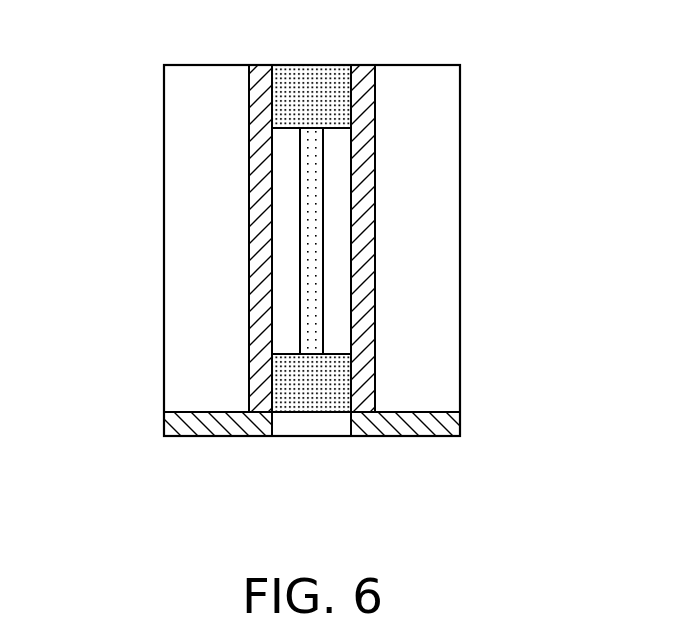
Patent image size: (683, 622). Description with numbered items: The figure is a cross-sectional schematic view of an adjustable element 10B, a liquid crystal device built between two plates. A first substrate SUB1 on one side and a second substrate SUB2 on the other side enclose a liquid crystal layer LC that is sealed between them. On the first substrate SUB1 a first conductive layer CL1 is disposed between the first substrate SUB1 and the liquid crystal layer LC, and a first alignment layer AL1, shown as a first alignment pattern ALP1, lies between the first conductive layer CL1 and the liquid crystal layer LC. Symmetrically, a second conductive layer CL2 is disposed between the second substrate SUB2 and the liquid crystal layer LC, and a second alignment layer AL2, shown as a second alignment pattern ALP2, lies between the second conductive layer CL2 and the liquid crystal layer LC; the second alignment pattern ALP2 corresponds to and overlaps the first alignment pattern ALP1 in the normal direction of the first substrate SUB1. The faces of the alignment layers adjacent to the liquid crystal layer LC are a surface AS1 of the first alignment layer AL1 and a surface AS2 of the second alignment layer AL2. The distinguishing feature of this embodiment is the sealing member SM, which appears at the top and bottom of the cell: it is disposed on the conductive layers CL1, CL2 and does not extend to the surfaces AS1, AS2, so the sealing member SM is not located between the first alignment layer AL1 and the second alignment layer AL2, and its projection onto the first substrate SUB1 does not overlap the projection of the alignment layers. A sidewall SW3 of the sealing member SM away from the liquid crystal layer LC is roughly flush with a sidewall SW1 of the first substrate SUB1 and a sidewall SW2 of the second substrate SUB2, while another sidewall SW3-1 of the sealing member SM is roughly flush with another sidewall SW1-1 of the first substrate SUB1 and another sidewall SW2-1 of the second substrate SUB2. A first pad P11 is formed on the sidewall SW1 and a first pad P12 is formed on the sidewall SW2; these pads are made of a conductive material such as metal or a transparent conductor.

The adjustable element 10B is at (655, 527).
The second substrate SUB2 is at (177, 172).
The first substrate SUB1 is at (422, 185).
The second conductive layer CL2 is at (260, 205).
The first conductive layer CL1 is at (360, 247).
The second alignment pattern ALP2 is at (282, 245).
The second alignment layer AL2 is at (286, 241).
The first alignment pattern ALP1 is at (337, 268).
The first alignment layer AL1 is at (337, 241).
The liquid crystal layer LC is at (310, 308).
The sealing member SM is at (316, 80).
The sidewall of the second substrate SW2 is at (207, 418).
The sidewall of the first substrate SW1 is at (423, 418).
The first pad P12 is at (233, 430).
The first pad P11 is at (391, 430).
The another sidewall of the second substrate SW2-1 is at (207, 58).
The another sidewall of the sealing member SW3-1 is at (344, 58).
The another sidewall of the first substrate SW1-1 is at (430, 58).
The sidewall of the sealing member SW3 is at (312, 420).
The surface of the first alignment layer AS1 is at (292, 309).
The surface of the second alignment layer AS2 is at (331, 318).